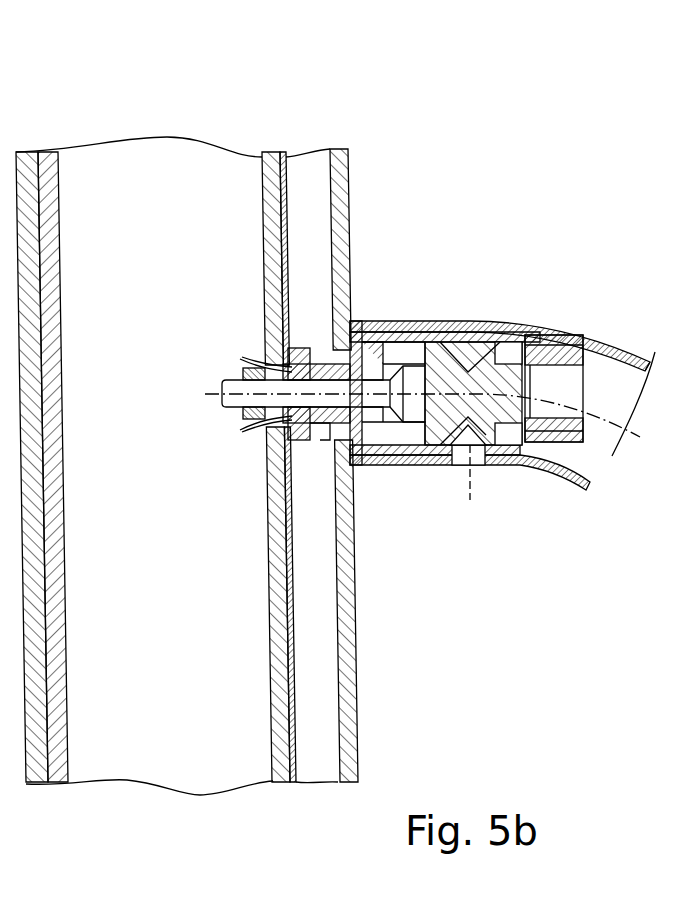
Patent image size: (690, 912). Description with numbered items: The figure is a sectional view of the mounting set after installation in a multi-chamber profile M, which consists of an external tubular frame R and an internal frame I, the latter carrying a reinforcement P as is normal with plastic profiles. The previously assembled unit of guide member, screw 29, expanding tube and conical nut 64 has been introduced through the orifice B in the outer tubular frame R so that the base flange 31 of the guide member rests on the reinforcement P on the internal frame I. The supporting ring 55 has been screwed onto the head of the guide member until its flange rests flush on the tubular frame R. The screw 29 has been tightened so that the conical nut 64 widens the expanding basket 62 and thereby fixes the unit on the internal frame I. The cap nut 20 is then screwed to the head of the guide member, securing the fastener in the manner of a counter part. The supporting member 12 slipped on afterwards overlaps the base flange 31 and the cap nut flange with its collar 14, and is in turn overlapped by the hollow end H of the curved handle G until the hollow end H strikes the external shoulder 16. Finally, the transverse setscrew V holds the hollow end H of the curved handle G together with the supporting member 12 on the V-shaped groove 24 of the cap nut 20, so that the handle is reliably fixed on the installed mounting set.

The supporting member 12 is at (548, 452).
The collar 14 is at (365, 465).
The external shoulder 16 is at (394, 322).
The cap nut 20 is at (547, 324).
The V-shaped groove 24 is at (468, 325).
The screw 29 is at (224, 396).
The base flange 31 is at (296, 458).
The supporting ring 55 is at (322, 442).
The expanding basket 62 is at (272, 366).
The conical nut 64 is at (244, 371).
The outer wall A is at (292, 176).
The orifice B is at (274, 352).
The external tubular frame R is at (349, 185).
The multi-chamber profile M is at (125, 75).
The transverse setscrew V is at (462, 462).
The hollow end H is at (633, 356).
The curved handle G is at (612, 456).
The internal frame I is at (283, 782).
The reinforcement P is at (292, 782).